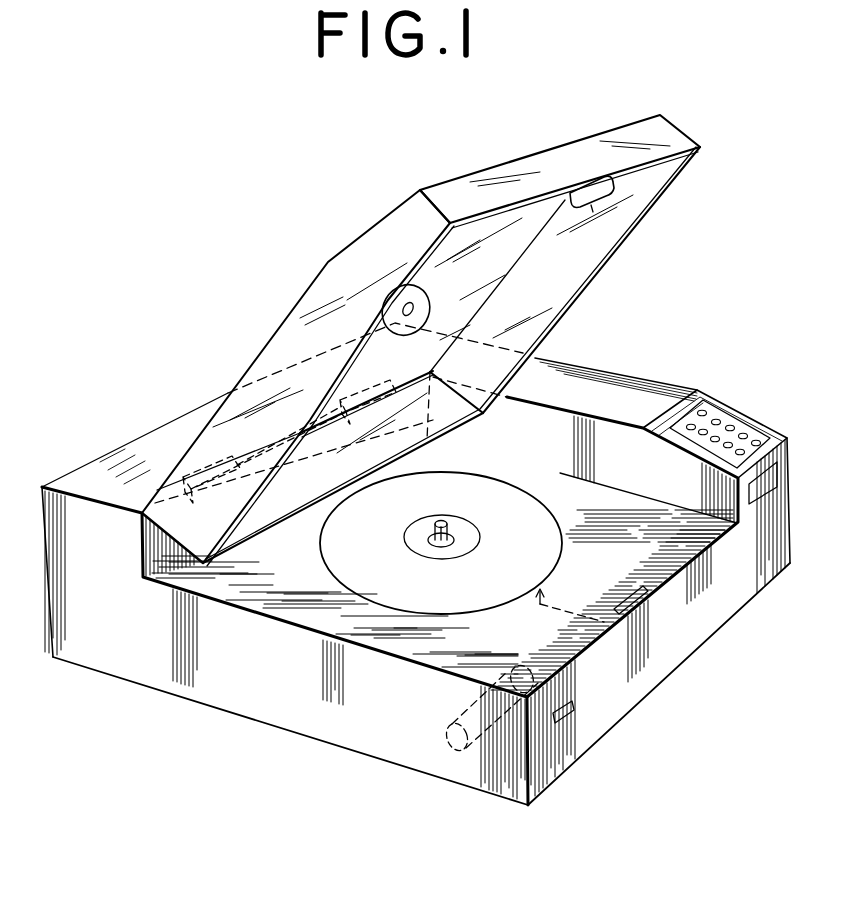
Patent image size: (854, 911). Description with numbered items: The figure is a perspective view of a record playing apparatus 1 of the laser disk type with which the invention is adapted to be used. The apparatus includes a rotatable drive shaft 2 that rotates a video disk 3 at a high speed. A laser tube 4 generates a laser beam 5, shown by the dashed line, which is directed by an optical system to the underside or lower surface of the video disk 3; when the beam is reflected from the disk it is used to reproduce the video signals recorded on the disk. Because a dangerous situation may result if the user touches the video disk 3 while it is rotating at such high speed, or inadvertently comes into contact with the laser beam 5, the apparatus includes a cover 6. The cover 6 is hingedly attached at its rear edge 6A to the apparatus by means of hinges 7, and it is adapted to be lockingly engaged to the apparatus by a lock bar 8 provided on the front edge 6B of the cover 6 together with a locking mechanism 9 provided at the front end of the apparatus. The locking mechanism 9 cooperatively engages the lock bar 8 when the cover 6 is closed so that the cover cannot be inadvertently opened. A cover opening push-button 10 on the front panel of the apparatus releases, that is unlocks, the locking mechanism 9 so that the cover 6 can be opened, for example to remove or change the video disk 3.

The record playing apparatus 1 is at (235, 717).
The rotatable drive shaft 2 is at (440, 525).
The video disk 3 is at (337, 565).
The laser tube 4 is at (455, 752).
The laser beam 5 is at (535, 672).
The cover 6 is at (245, 380).
The rear edge 6A is at (163, 545).
The front edge 6B is at (520, 165).
The hinges 7 is at (302, 481).
The lock bar 8 is at (590, 180).
The locking mechanism 9 is at (648, 604).
The cover opening push-button 10 is at (567, 718).